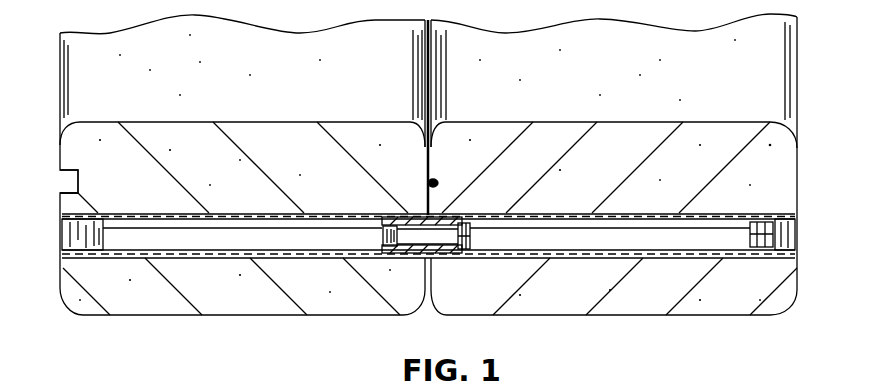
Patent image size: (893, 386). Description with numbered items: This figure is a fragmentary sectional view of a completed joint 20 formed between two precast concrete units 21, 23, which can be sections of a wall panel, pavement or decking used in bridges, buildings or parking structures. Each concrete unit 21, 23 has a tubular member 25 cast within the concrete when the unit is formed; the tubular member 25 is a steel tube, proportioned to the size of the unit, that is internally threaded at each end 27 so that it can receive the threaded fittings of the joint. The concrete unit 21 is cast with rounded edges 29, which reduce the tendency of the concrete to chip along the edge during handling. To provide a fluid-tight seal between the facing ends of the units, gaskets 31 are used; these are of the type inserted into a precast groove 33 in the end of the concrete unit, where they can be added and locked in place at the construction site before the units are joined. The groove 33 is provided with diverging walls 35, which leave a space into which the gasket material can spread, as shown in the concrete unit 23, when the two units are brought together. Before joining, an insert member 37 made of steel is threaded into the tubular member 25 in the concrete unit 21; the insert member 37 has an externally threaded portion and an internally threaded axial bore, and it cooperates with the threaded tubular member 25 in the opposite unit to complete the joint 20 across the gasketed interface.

The completed joint 20 is at (421, 216).
The precast concrete unit 21 is at (333, 36).
The precast concrete unit 23 is at (510, 46).
The tubular member 25 is at (222, 214).
The end 27 is at (791, 230).
The rounded edges 29 is at (420, 125).
The gasket 31 is at (436, 180).
The groove 33 is at (65, 185).
The diverging walls 35 is at (63, 201).
The insert member 37 is at (390, 222).